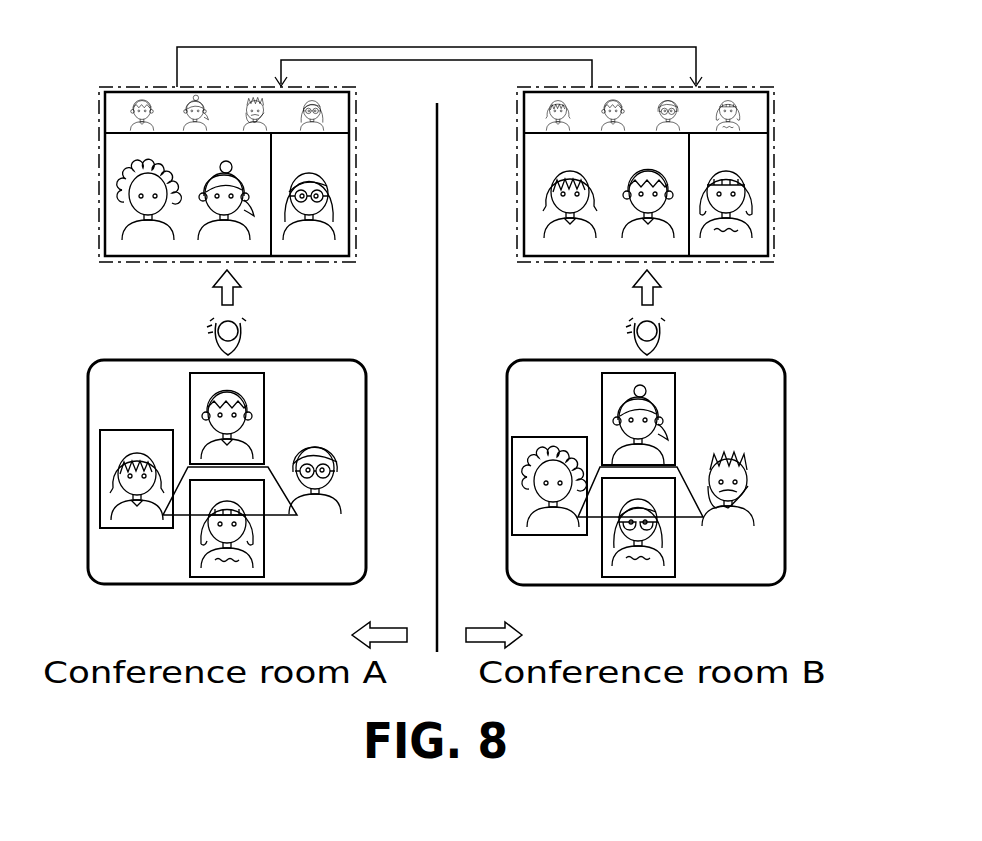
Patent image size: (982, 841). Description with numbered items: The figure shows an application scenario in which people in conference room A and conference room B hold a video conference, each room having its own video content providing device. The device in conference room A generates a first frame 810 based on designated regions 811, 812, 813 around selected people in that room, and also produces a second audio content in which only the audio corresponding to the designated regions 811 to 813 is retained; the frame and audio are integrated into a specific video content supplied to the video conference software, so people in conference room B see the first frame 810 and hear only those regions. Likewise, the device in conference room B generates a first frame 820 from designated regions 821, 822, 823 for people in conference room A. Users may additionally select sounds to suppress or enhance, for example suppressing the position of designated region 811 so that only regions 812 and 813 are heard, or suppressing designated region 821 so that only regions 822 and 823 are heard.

The first frame 810 is at (775, 226).
The designated region 811 is at (190, 398).
The designated region 812 is at (100, 445).
The designated region 813 is at (190, 550).
The first frame 820 is at (99, 226).
The designated region 821 is at (602, 405).
The designated region 822 is at (512, 455).
The designated region 823 is at (680, 550).